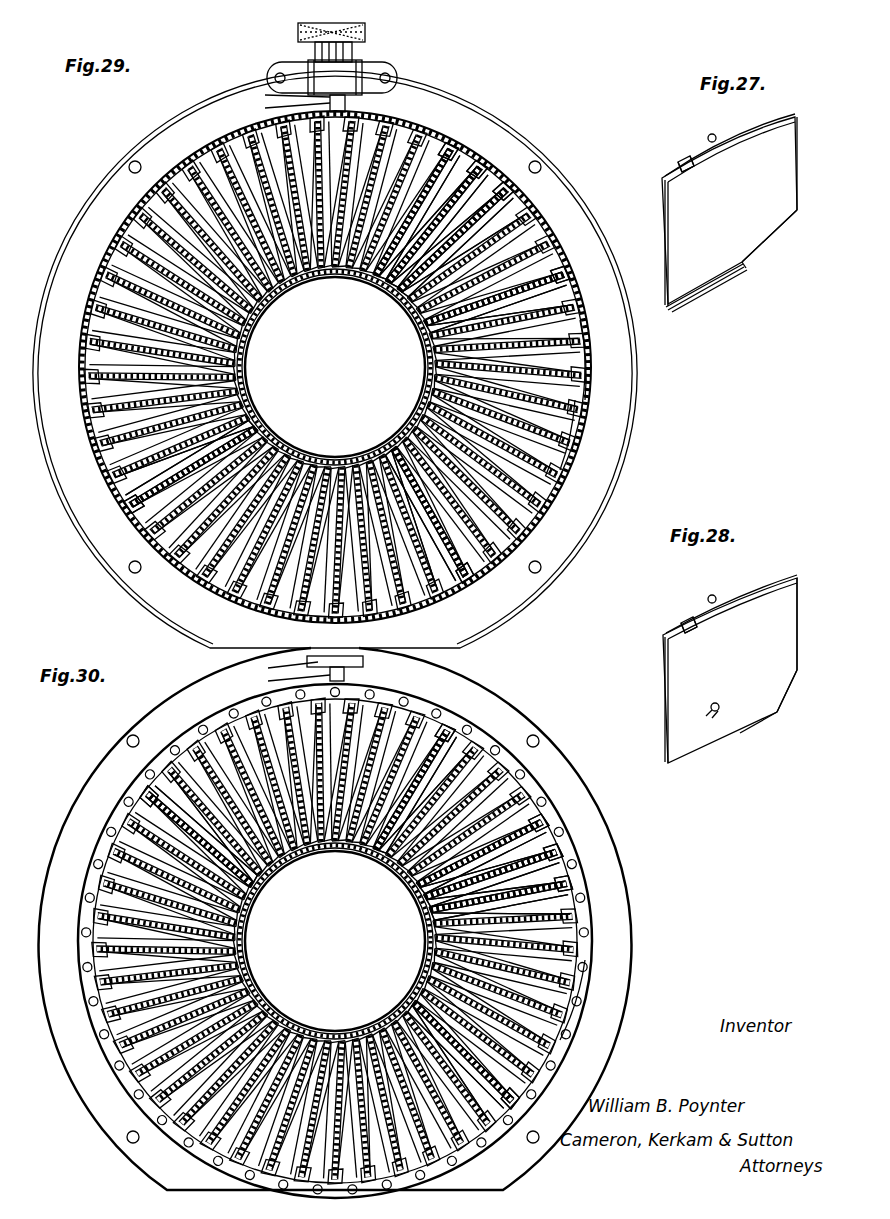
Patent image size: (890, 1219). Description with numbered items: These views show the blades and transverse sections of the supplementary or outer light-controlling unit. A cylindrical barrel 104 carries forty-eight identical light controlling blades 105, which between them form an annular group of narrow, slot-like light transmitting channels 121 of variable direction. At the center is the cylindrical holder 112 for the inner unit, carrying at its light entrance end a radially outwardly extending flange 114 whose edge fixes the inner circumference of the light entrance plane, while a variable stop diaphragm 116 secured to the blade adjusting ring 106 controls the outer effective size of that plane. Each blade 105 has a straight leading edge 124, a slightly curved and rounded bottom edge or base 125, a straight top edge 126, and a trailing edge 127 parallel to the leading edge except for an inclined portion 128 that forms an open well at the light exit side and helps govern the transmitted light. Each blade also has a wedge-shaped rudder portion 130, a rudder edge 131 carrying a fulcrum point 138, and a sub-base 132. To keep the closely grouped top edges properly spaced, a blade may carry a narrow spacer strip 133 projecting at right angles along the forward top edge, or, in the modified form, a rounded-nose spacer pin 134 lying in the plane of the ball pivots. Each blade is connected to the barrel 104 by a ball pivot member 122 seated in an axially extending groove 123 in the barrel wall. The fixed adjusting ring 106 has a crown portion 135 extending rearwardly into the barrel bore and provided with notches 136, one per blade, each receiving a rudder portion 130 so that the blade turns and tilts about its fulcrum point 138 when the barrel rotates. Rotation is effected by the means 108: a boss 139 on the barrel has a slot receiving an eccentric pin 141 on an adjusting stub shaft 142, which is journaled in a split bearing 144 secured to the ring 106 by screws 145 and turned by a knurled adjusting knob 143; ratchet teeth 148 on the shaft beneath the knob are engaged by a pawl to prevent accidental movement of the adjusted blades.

In FIG. 29, the cylindrical barrel 104 is at (455, 185).
In FIG. 30, the cylindrical barrel 104 is at (556, 850).
In FIG. 29, the light controlling blade 105 is at (470, 200).
In FIG. 30, the light controlling blade 105 is at (566, 882).
In FIG. 27, the light controlling blade 105 is at (690, 205).
In FIG. 28, the light controlling blade 105 is at (680, 668).
In FIG. 29, the blade adjusting ring 106 is at (158, 142).
In FIG. 30, the blade adjusting ring 106 is at (122, 762).
In FIG. 29, the barrel rotating means 108 is at (349, 53).
In FIG. 29, the cylindrical holder 112 is at (352, 458).
In FIG. 30, the cylindrical holder 112 is at (352, 1032).
In FIG. 29, the flange 114 is at (423, 404).
In FIG. 30, the flange 114 is at (432, 944).
In FIG. 29, the variable stop diaphragm 116 is at (420, 165).
In FIG. 30, the variable stop diaphragm 116 is at (440, 760).
In FIG. 29, the light transmitting channel 121 is at (170, 235).
In FIG. 30, the light transmitting channel 121 is at (142, 830).
In FIG. 29, the ball pivot member 122 is at (575, 352).
In FIG. 30, the ball pivot member 122 is at (334, 941).
In FIG. 27, the ball pivot member 122 is at (710, 136).
In FIG. 28, the ball pivot member 122 is at (708, 597).
In FIG. 29, the axially extending groove 123 is at (560, 425).
In FIG. 30, the axially extending groove 123 is at (568, 1000).
In FIG. 29, the leading edge 124 is at (510, 515).
In FIG. 30, the leading edge 124 is at (545, 1076).
In FIG. 27, the leading edge 124 is at (664, 240).
In FIG. 28, the leading edge 124 is at (662, 699).
In FIG. 27, the bottom edge or base 125 is at (735, 132).
In FIG. 28, the bottom edge or base 125 is at (762, 590).
In FIG. 27, the top edge 126 is at (752, 262).
In FIG. 28, the top edge 126 is at (735, 733).
In FIG. 27, the trailing edge 127 is at (795, 176).
In FIG. 28, the trailing edge 127 is at (793, 606).
In FIG. 27, the inclined edge portion 128 is at (783, 236).
In FIG. 28, the inclined edge portion 128 is at (780, 706).
In FIG. 27, the rudder portion 130 is at (692, 162).
In FIG. 28, the rudder portion 130 is at (695, 625).
In FIG. 27, the rudder edge 131 is at (680, 165).
In FIG. 28, the rudder edge 131 is at (683, 624).
In FIG. 27, the sub-base 132 is at (684, 180).
In FIG. 28, the sub-base 132 is at (682, 640).
In FIG. 29, the spacer strip 133 is at (422, 332).
In FIG. 30, the spacer strip 133 is at (422, 906).
In FIG. 27, the spacer strip 133 is at (690, 292).
In FIG. 28, the spacer pin 134 is at (698, 718).
In FIG. 29, the crown portion 135 is at (575, 300).
In FIG. 30, the crown portion 135 is at (540, 792).
In FIG. 29, the notch 136 is at (577, 314).
In FIG. 30, the notch 136 is at (540, 806).
In FIG. 27, the fulcrum point 138 is at (688, 172).
In FIG. 28, the fulcrum point 138 is at (688, 636).
In FIG. 29, the boss 139 is at (347, 107).
In FIG. 30, the boss 139 is at (348, 672).
In FIG. 29, the pin 141 is at (279, 108).
In FIG. 30, the pin 141 is at (281, 680).
In FIG. 29, the adjusting stub shaft 142 is at (279, 94).
In FIG. 29, the knurled adjusting knob 143 is at (298, 28).
In FIG. 29, the split bearing 144 is at (300, 76).
In FIG. 30, the split bearing 144 is at (275, 666).
In FIG. 29, the screw 145 is at (398, 80).
In FIG. 29, the ratchet teeth 148 is at (318, 52).